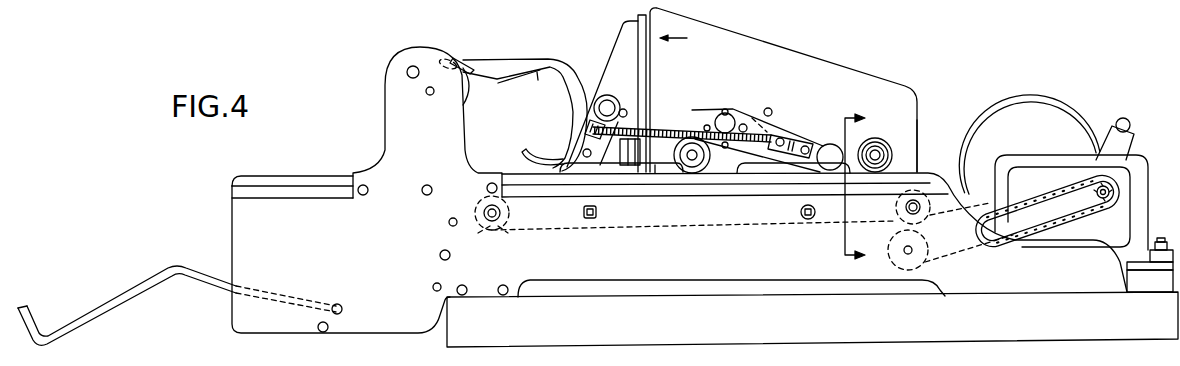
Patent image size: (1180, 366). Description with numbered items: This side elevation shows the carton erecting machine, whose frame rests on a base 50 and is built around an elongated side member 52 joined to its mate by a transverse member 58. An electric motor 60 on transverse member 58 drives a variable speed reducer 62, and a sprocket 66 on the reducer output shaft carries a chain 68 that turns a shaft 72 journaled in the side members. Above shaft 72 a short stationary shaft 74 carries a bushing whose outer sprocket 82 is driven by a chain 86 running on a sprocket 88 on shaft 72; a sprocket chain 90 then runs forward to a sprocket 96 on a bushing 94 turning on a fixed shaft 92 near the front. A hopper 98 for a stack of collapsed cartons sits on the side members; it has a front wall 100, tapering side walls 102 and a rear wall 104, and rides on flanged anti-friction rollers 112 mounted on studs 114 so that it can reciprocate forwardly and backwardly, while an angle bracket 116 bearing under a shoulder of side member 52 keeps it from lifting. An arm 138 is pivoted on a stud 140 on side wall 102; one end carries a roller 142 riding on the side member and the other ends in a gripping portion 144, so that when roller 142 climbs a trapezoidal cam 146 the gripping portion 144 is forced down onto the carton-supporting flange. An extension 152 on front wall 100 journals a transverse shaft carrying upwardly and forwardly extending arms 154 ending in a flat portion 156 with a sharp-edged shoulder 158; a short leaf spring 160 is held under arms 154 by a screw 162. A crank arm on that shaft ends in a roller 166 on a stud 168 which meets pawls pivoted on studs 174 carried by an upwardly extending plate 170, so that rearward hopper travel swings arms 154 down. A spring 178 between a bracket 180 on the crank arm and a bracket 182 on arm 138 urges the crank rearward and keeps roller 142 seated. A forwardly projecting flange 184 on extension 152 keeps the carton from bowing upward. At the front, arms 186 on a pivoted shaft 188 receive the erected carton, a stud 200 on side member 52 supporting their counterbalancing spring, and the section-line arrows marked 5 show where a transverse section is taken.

The base 50 is at (632, 332).
The side member 52 is at (621, 276).
The transverse member 58 is at (1143, 286).
The electric motor 60 is at (1070, 118).
The variable speed reducer 62 is at (1137, 160).
The sprocket 66 is at (1108, 208).
The chain 68 is at (1056, 236).
The shaft 72 is at (914, 250).
The stationary shaft 74 is at (905, 207).
The outer sprocket 82 is at (931, 207).
The chain 86 is at (895, 227).
The sprocket 88 is at (904, 271).
The sprocket chain 90 is at (766, 230).
The fixed shaft 92 is at (489, 223).
The bushing 94 is at (501, 226).
The sprocket 96 is at (505, 215).
The hopper 98 is at (797, 56).
The front wall 100 is at (637, 22).
The side wall 102 is at (706, 33).
The rear wall 104 is at (918, 116).
The flanged anti-friction roller 112 is at (882, 143).
The stud 114 is at (892, 153).
The angle bracket 116 is at (772, 175).
The arm 138 is at (700, 112).
The stud 140 is at (733, 122).
The roller 142 is at (830, 145).
The gripping portion 144 is at (625, 155).
The trapezoidal cam 146 is at (655, 168).
The extension 152 is at (612, 56).
The arm 154 is at (510, 57).
The flat portion 156 is at (465, 58).
The sharp edged shoulder 158 is at (466, 106).
The leaf spring 160 is at (513, 84).
The screw 162 is at (537, 68).
The roller 166 is at (610, 100).
The stud 168 is at (612, 108).
The plate 170 is at (392, 102).
The stud 174 is at (409, 67).
The spring 178 is at (654, 126).
The bracket 180 is at (590, 128).
The bracket 182 is at (790, 134).
The flange 184 is at (522, 150).
The arm 186 is at (137, 296).
The shaft 188 is at (340, 307).
The stud 200 is at (324, 333).
The section line 5 is at (851, 187).